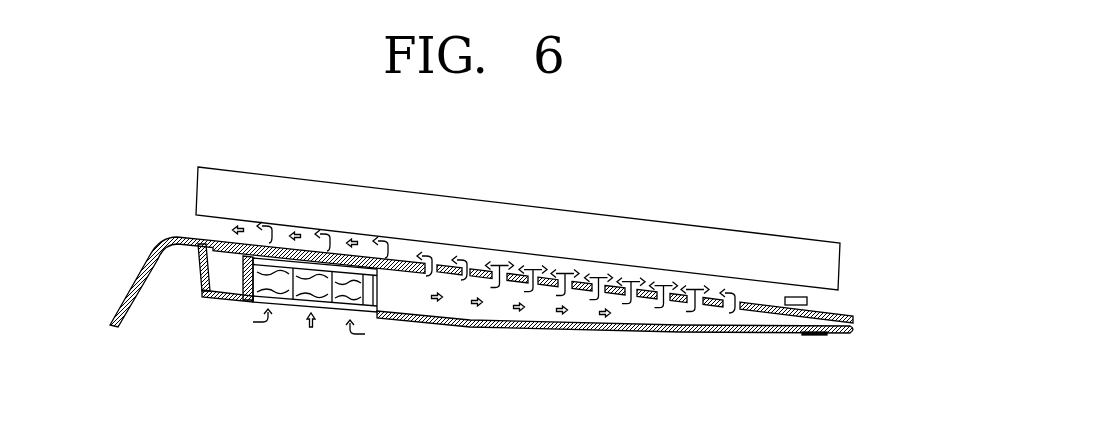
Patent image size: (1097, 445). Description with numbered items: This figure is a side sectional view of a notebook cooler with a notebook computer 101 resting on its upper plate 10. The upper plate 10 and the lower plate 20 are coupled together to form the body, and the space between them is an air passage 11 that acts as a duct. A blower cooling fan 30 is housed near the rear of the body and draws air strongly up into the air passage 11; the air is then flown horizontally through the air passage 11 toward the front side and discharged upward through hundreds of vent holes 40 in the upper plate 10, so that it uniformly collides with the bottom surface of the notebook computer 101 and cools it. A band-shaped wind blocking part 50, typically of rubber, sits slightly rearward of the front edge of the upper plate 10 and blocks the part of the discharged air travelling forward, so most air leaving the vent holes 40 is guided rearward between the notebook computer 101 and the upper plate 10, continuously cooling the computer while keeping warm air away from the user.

The upper plate 10 is at (763, 314).
The air passage 11 is at (401, 299).
The lower plate 20 is at (517, 330).
The cooling fans 30 is at (262, 282).
The vent holes 40 is at (466, 270).
The wind blocking part 50 is at (807, 303).
The notebook computer 101 is at (814, 247).